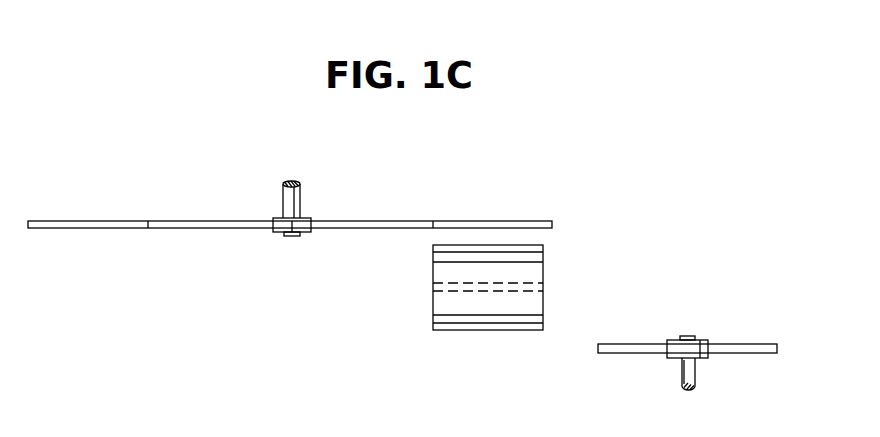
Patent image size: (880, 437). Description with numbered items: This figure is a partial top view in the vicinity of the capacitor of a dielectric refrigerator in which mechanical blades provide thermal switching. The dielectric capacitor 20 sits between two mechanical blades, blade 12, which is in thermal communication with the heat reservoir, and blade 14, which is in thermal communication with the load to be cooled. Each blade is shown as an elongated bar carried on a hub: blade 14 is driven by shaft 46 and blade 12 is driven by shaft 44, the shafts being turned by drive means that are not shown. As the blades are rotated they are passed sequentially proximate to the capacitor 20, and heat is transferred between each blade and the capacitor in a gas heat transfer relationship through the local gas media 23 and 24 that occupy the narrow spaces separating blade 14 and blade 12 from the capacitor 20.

The mechanical blade 12 is at (752, 337).
The mechanical blade 14 is at (78, 206).
The dielectric capacitor 20 is at (432, 290).
The local gas medium 23 is at (553, 240).
The local gas medium 24 is at (557, 335).
The shaft 44 is at (681, 376).
The shaft 46 is at (301, 197).